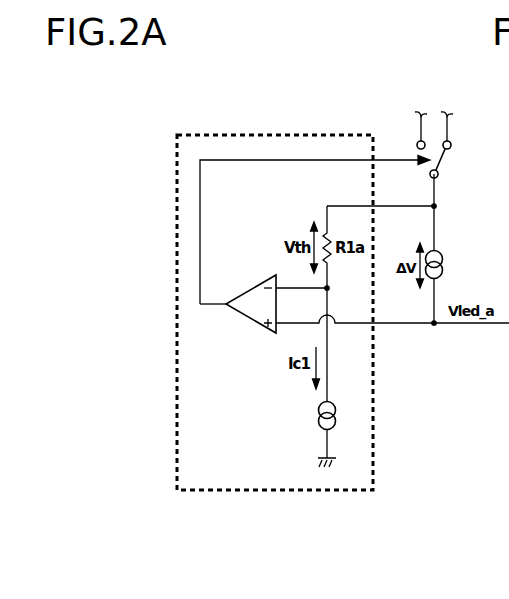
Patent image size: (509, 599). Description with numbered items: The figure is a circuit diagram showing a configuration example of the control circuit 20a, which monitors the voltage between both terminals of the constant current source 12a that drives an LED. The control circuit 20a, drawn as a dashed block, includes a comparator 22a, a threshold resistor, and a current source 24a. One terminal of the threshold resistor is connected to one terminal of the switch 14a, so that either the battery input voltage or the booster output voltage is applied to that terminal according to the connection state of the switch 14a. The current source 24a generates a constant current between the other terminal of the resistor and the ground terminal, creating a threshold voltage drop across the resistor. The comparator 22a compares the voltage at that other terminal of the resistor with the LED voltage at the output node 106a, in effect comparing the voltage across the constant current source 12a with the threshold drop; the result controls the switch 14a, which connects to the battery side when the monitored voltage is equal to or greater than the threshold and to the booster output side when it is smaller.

The control circuit 20a is at (275, 491).
The comparator 22a is at (254, 321).
The current source 24a is at (318, 414).
The constant current source 12a is at (446, 265).
The switch 14a is at (446, 164).
The LED terminal 106a is at (508, 350).